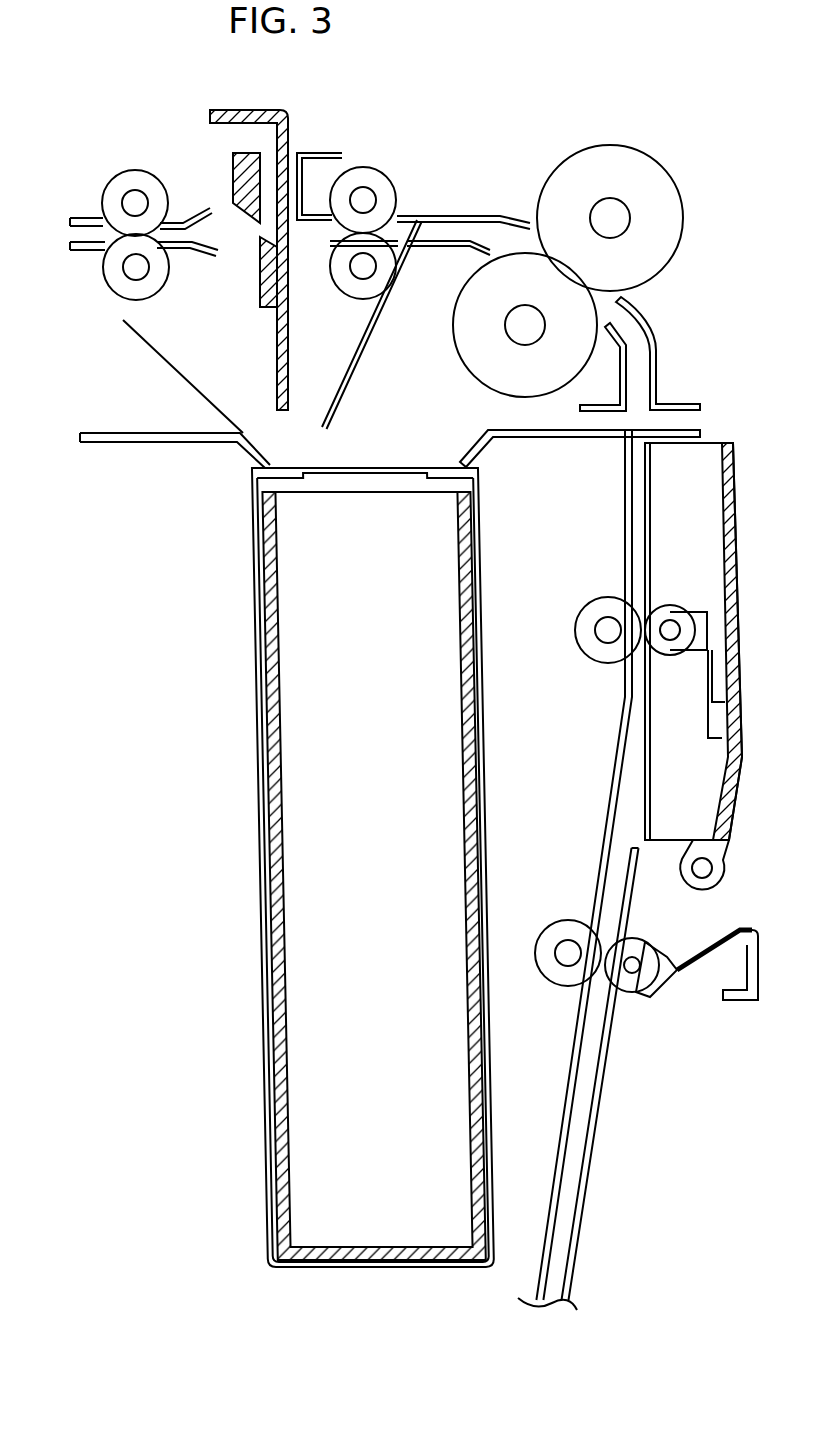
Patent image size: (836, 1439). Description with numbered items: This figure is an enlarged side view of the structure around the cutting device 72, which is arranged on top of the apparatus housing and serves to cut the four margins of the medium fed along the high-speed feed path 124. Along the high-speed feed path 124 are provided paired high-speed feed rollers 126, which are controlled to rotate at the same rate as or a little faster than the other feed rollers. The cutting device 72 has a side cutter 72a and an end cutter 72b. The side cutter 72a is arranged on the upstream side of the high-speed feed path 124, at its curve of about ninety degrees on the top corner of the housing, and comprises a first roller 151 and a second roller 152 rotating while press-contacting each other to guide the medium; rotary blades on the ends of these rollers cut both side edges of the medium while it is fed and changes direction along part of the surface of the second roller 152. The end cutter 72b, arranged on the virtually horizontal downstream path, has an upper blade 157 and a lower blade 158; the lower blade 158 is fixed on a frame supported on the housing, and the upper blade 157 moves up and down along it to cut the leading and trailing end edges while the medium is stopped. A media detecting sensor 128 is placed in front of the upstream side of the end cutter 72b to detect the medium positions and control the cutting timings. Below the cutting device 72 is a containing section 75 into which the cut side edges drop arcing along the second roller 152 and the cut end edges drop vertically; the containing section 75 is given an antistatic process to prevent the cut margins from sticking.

The cutting device 72 is at (499, 146).
The side cutter 72a is at (690, 130).
The end cutter 72b is at (262, 330).
The containing section 75 is at (298, 686).
The high-speed feed path 124 is at (605, 1068).
The paired high-speed feed rollers 126 is at (138, 183).
The media detecting sensor 128 is at (448, 170).
The first roller 151 is at (673, 253).
The second roller 152 is at (473, 373).
The upper blade 157 is at (233, 175).
The lower blade 158 is at (260, 293).